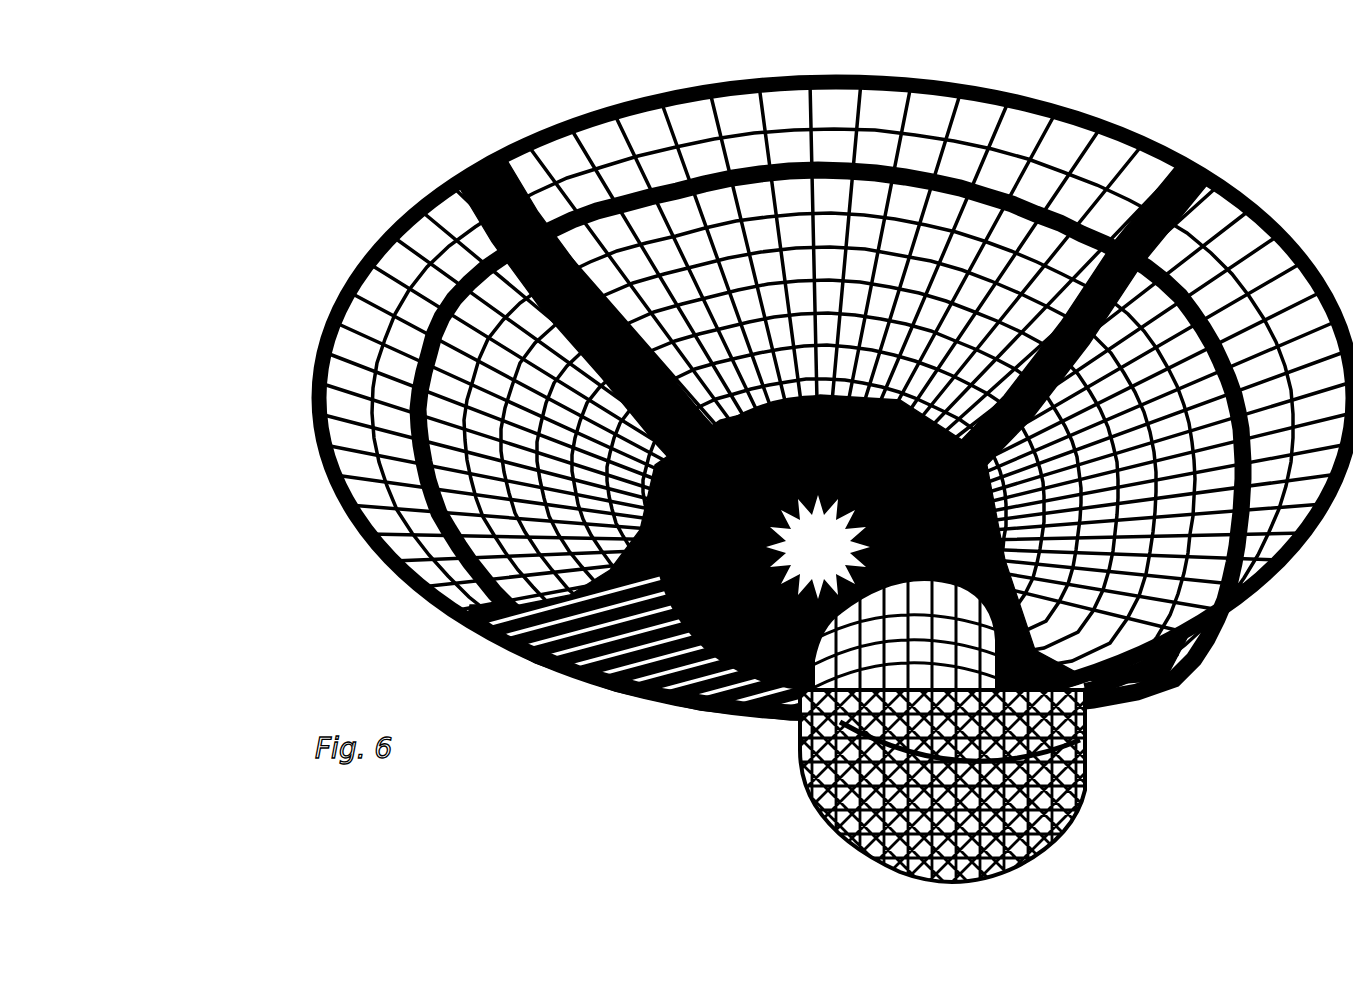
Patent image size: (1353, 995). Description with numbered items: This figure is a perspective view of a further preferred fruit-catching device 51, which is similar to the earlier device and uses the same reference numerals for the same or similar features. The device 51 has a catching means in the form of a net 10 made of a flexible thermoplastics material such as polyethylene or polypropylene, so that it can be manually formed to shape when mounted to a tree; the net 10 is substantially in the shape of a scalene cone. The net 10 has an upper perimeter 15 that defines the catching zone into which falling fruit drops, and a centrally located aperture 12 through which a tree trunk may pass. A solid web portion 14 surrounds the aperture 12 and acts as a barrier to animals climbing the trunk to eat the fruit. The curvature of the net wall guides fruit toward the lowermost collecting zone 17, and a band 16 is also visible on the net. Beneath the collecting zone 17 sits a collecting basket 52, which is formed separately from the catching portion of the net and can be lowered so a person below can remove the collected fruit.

The net 10 is at (836, 118).
The aperture 12 is at (836, 560).
The solid web portion 14 is at (682, 700).
The upper perimeter 15 is at (1105, 130).
The intermediate reinforcing band 16 is at (714, 170).
The collecting zone 17 is at (1100, 712).
The device 51 is at (306, 545).
The collecting basket 52 is at (840, 838).